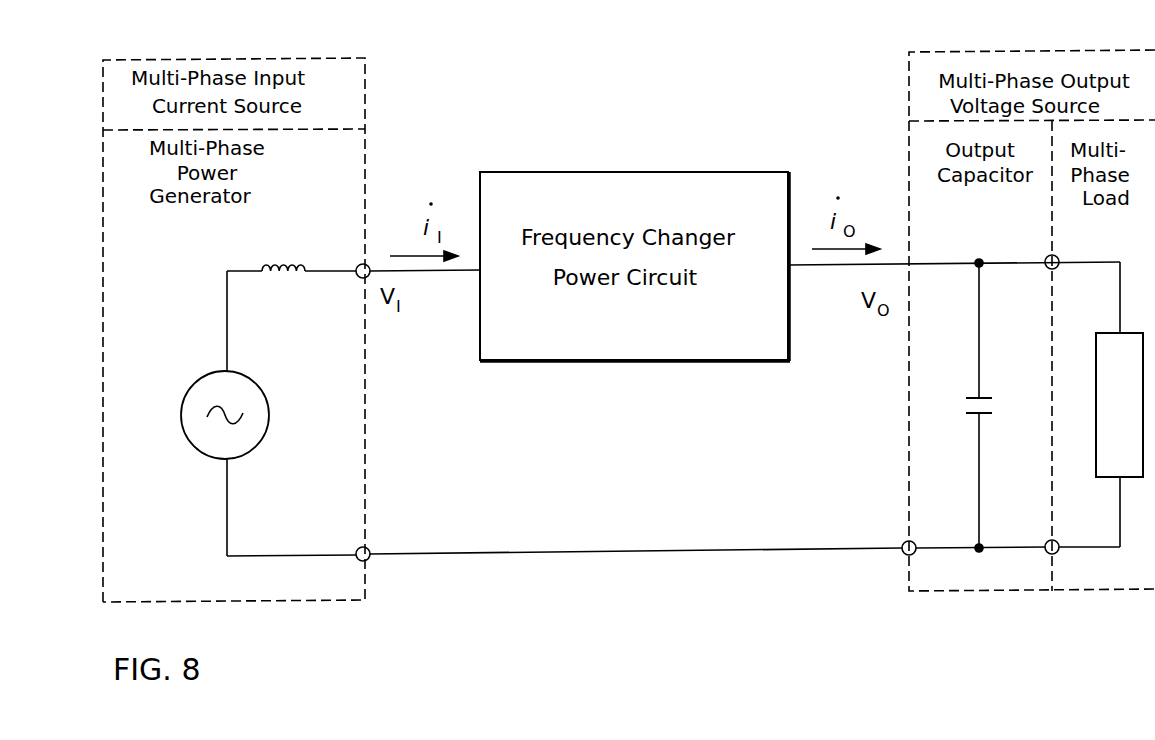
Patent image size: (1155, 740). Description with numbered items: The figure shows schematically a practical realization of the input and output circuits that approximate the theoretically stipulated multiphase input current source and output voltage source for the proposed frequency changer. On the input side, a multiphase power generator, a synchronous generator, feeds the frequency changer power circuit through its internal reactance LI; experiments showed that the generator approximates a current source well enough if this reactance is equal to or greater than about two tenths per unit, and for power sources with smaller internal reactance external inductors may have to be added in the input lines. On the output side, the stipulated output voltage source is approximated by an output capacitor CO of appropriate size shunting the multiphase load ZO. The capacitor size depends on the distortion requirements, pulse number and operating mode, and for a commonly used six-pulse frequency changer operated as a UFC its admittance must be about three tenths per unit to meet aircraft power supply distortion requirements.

The internal reactance LI is at (300, 252).
The output capacitor CO is at (992, 405).
The load ZO is at (1119, 405).